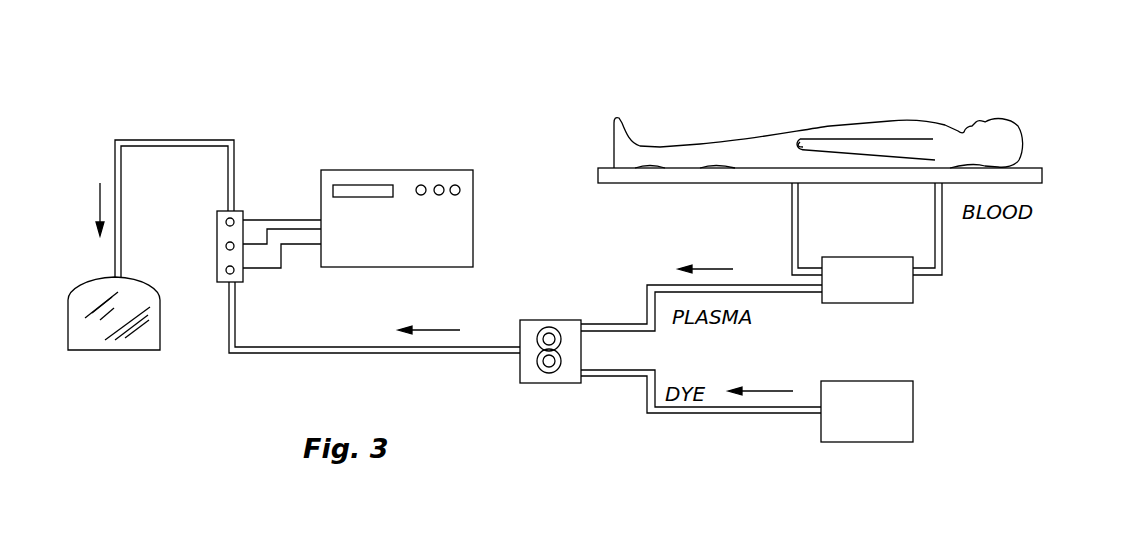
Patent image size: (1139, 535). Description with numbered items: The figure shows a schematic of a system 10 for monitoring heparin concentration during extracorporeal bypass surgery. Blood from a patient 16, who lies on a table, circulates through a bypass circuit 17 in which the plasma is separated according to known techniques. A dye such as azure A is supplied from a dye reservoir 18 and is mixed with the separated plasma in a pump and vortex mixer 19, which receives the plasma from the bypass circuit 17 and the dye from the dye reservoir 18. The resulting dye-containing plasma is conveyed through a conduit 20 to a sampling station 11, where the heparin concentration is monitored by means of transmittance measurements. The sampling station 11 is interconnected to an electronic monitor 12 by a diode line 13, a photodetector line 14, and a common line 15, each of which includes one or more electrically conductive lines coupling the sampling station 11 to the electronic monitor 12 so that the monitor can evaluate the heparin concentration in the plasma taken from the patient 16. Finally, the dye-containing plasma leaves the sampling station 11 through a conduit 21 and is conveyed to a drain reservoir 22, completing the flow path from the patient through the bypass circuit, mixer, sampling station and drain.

The system 10 is at (80, 139).
The sampling station 11 is at (217, 235).
The electronic monitor 12 is at (412, 170).
The diode line 13 is at (268, 220).
The photodetector line 14 is at (300, 229).
The common line 15 is at (272, 268).
The patient 16 is at (940, 128).
The bypass circuit 17 is at (886, 257).
The dye reservoir 18 is at (866, 442).
The pump and vortex mixer 19 is at (572, 320).
The conduit 20 is at (390, 353).
The conduit 21 is at (121, 168).
The drain reservoir 22 is at (93, 283).